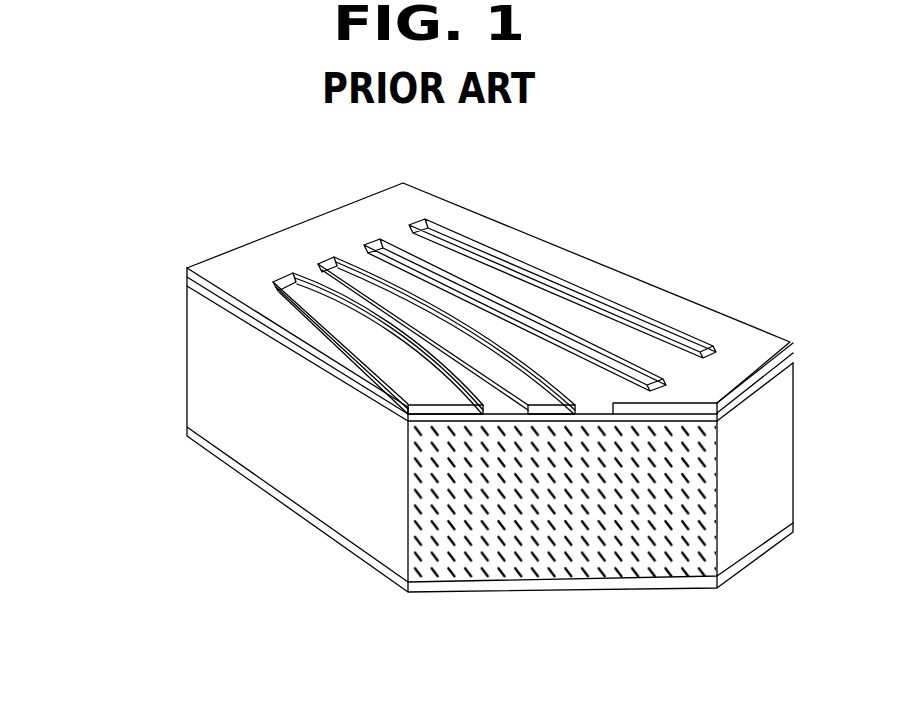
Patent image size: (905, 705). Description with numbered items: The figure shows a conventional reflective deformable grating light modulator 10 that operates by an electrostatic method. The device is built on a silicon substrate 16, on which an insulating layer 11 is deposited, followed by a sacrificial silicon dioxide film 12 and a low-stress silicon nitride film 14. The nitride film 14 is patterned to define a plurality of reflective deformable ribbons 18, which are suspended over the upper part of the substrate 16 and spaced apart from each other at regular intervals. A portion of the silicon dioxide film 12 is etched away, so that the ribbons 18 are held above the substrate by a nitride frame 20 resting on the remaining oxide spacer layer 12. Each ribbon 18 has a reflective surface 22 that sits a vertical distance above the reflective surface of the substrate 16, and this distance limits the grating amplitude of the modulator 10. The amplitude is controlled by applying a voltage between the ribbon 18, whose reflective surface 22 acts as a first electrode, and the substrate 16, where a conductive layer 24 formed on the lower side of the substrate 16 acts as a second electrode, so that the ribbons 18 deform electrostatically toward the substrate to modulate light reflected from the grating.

The reflective deformable grating light modulator 10 is at (118, 288).
The insulating layer 11 is at (794, 364).
The sacrificial silicon dioxide film 12 is at (794, 343).
The low-stress silicon nitride film 14 is at (365, 398).
The silicon substrate 16 is at (767, 493).
The reflective deformable ribbons 18 is at (314, 270).
The nitride frame 20 is at (597, 278).
The reflective surface 22 is at (295, 349).
The conductive layer 24 is at (600, 592).